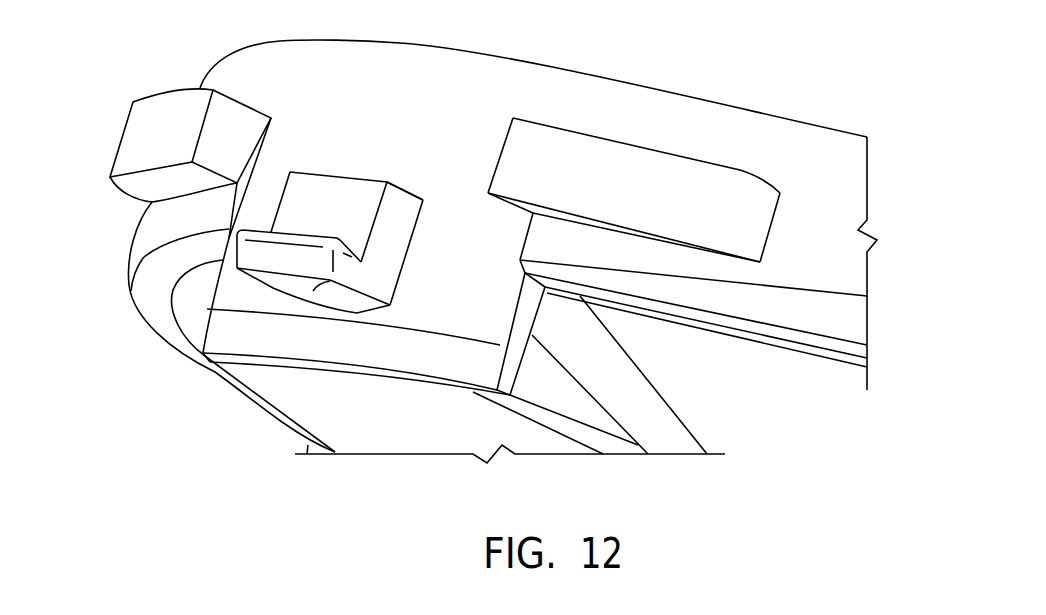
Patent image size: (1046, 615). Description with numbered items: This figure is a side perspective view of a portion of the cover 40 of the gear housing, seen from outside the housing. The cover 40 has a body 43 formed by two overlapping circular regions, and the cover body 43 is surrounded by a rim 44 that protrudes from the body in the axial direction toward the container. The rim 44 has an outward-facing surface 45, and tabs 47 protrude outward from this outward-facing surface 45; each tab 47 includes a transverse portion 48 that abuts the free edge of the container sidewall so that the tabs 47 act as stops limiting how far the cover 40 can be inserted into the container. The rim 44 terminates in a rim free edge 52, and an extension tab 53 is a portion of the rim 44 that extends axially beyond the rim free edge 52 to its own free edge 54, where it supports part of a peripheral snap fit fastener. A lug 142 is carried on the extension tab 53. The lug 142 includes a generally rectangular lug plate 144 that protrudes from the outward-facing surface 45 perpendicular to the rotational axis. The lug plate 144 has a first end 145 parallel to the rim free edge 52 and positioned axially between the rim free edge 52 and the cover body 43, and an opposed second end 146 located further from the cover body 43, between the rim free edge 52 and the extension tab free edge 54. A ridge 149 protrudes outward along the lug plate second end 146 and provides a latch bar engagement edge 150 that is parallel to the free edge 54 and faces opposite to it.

The cover 40 is at (178, 31).
The cover body 43 is at (625, 80).
The rim 44 is at (693, 220).
The outward-facing surface 45 is at (820, 133).
The tabs 47 is at (411, 175).
The transverse portion 48 is at (133, 124).
The rim free edge 52 is at (798, 350).
The extension tab 53 is at (497, 316).
The extension tab free edge 54 is at (433, 383).
The lug 142 is at (338, 188).
The lug plate 144 is at (402, 200).
The lug plate first end 145 is at (296, 170).
The lug plate second end 146 is at (330, 300).
The ridge 149 is at (295, 265).
The latch bar engagement edge 150 is at (348, 244).